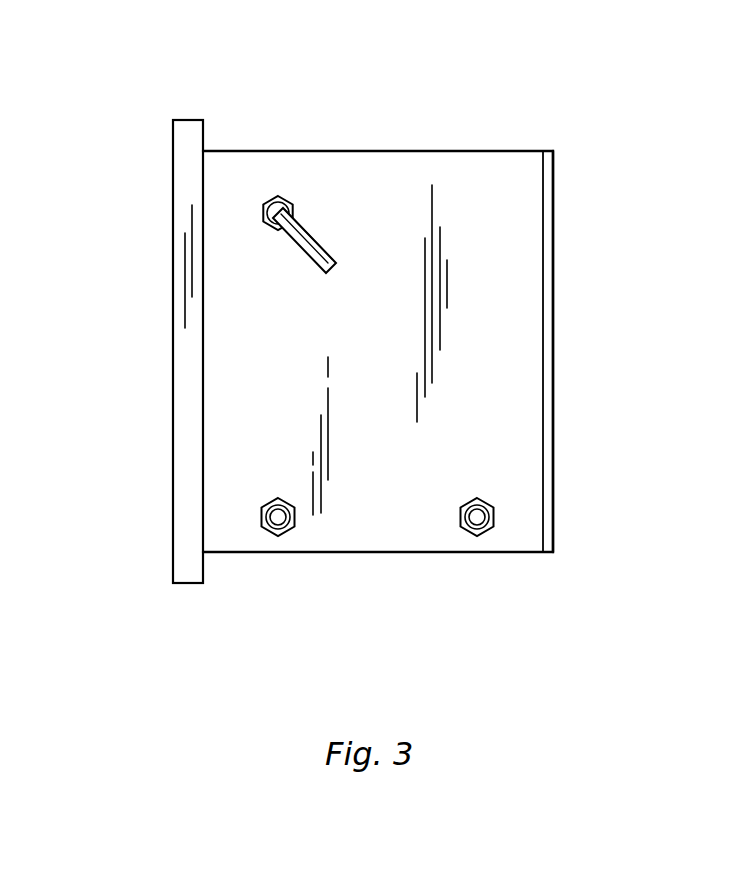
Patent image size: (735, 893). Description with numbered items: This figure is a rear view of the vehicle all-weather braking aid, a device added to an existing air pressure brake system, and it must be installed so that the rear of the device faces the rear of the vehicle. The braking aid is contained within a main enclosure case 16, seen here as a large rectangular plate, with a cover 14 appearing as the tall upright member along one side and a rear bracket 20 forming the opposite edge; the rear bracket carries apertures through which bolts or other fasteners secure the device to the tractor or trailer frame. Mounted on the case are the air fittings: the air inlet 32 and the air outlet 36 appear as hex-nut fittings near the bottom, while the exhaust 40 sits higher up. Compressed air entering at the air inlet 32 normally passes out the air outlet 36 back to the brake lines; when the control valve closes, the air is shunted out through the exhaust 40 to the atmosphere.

The cover 14 is at (173, 178).
The main enclosure case 16 is at (385, 193).
The rear bracket 20 is at (555, 253).
The exhaust 40 is at (278, 193).
The air outlet 36 is at (263, 507).
The air inlet 32 is at (495, 505).